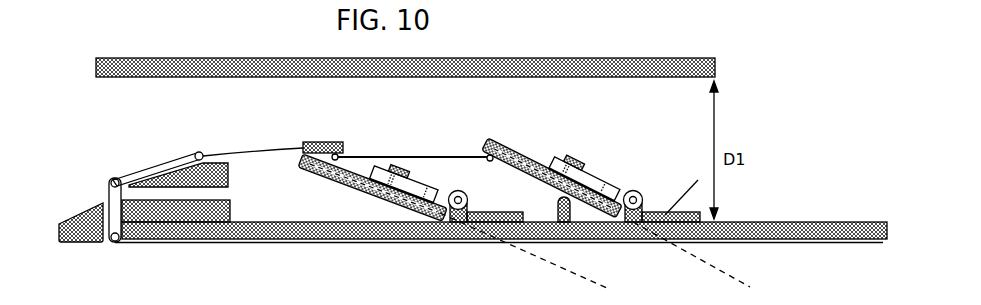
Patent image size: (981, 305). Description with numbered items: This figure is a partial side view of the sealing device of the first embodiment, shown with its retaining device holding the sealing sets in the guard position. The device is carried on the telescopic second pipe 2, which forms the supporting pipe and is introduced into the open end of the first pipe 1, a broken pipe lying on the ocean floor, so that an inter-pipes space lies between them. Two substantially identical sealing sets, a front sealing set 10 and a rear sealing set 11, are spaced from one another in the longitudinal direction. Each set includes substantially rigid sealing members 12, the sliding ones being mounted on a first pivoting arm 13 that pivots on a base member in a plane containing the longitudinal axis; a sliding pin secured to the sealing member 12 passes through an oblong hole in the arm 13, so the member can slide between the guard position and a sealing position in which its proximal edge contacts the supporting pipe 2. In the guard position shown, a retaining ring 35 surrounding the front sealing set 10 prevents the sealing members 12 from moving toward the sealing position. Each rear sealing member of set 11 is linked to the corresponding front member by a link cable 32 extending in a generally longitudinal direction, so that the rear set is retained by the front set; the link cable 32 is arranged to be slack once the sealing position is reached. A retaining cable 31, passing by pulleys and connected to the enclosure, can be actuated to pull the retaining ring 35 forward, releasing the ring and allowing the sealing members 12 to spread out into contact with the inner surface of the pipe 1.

The first pipe 1 is at (262, 78).
The second pipe 2 is at (830, 227).
The front sealing set 10 is at (347, 208).
The rear sealing set 11 is at (606, 150).
The sealing member 12 is at (322, 163).
The first pivoting arm 13 is at (440, 210).
The retaining cable 31 is at (248, 150).
The link cable 32 is at (425, 155).
The retaining ring 35 is at (330, 143).